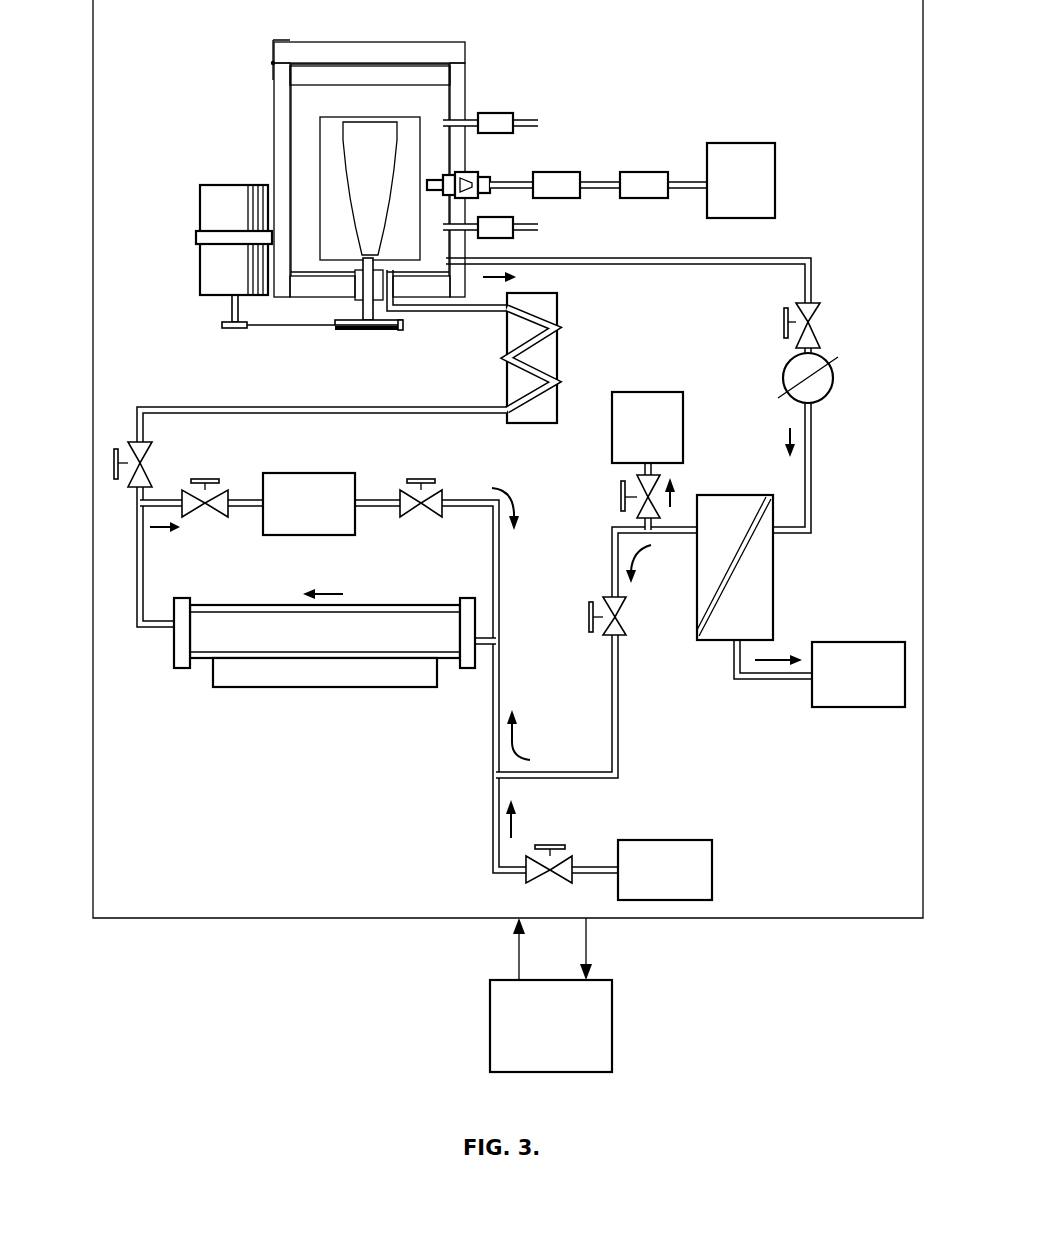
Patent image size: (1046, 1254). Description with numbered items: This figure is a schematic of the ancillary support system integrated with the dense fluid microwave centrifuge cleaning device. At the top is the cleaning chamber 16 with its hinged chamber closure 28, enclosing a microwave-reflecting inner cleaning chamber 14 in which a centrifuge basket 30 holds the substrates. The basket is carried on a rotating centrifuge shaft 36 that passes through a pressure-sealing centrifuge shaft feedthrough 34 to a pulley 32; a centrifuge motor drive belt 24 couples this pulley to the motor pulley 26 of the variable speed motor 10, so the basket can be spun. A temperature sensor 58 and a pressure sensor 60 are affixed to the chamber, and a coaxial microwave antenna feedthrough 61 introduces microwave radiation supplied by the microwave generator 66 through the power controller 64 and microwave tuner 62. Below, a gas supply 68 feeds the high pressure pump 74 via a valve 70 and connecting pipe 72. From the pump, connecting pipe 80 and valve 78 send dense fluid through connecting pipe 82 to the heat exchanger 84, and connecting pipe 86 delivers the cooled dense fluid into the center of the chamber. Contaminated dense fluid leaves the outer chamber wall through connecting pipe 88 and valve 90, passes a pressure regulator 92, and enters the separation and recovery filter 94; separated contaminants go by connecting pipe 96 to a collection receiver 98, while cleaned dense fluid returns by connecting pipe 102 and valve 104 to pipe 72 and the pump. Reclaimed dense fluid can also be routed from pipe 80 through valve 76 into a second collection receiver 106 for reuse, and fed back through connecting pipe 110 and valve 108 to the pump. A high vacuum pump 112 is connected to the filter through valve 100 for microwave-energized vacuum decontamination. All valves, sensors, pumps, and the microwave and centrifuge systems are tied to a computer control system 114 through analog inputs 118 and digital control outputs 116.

The variable speed motor 10 is at (250, 185).
The inner cleaning chamber 14 is at (310, 103).
The cleaning chamber 16 is at (290, 115).
The centrifuge motor drive belt 24 is at (290, 328).
The motor pulley 26 is at (230, 330).
The hinged chamber closure 28 is at (387, 42).
The centrifuge basket 30 is at (320, 148).
The pulley 32 is at (355, 331).
The pressure-sealing centrifuge shaft feedthrough 34 is at (352, 298).
The rotating centrifuge shaft 36 is at (405, 330).
The temperature sensor 58 is at (493, 113).
The pressure sensor 60 is at (510, 236).
The coaxial microwave antenna feedthrough 61 is at (487, 178).
The microwave tuner 62 is at (545, 172).
The power controller 64 is at (634, 172).
The microwave generator 66 is at (730, 143).
The gas supply 68 is at (660, 840).
The valve 70 is at (548, 845).
The connecting pipe 72 is at (493, 718).
The high pressure pump 74 is at (280, 605).
The valve 76 is at (207, 480).
The valve 78 is at (148, 465).
The connecting pipe 80 is at (143, 565).
The connecting pipe 82 is at (340, 406).
The heat exchanger 84 is at (558, 354).
The connecting pipe 86 is at (437, 313).
The connecting pipe 88 is at (638, 265).
The valve 90 is at (822, 327).
The pressure regulator 92 is at (833, 378).
The separation and recovery filter 94 is at (773, 590).
The connecting pipe 96 is at (740, 680).
The collection receiver 98 is at (855, 707).
The valve 100 is at (622, 497).
The connecting pipe 102 is at (612, 565).
The valve 104 is at (592, 617).
The collection receiver 106 is at (312, 473).
The valve 108 is at (420, 480).
The connecting pipe 110 is at (493, 553).
The high vacuum pump 112 is at (645, 392).
The computer control system 114 is at (612, 1028).
The digital control outputs 116 is at (519, 955).
The analog inputs 118 is at (586, 945).